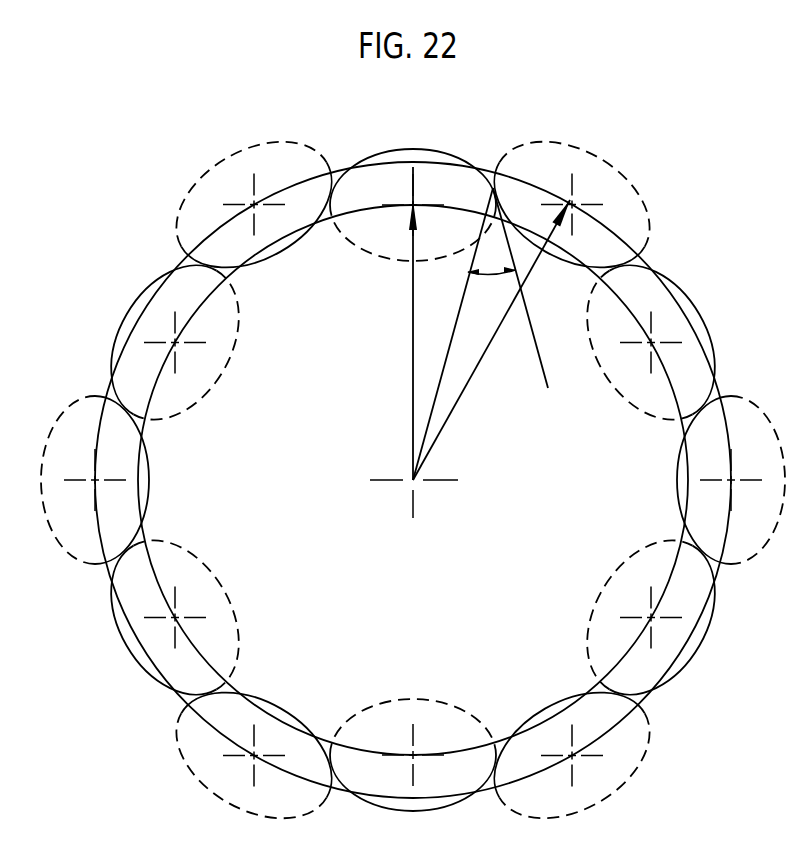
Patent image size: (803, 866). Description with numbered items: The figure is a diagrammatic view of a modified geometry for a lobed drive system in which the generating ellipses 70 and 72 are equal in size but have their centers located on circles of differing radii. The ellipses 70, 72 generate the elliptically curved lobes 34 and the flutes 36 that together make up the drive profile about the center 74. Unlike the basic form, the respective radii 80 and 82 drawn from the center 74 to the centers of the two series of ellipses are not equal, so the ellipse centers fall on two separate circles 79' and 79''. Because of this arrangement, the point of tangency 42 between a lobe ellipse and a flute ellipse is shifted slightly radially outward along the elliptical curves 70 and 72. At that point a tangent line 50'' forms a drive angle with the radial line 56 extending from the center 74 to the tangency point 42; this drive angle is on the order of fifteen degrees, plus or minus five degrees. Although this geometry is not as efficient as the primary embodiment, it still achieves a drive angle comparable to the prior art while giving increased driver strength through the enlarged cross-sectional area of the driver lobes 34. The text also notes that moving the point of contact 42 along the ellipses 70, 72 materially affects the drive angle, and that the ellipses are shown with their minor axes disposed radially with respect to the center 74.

The lobe 34 is at (413, 480).
The flute 36 is at (469, 166).
The point of tangency 42 is at (493, 188).
The tangent line 50'' is at (538, 305).
The radial line 56 is at (457, 318).
The ellipse 70 is at (619, 181).
The ellipse 72 is at (425, 167).
The center 74 is at (415, 480).
The circle 79' is at (413, 480).
The circle 79'' is at (413, 480).
The radius 80 is at (412, 330).
The radius 82 is at (470, 379).